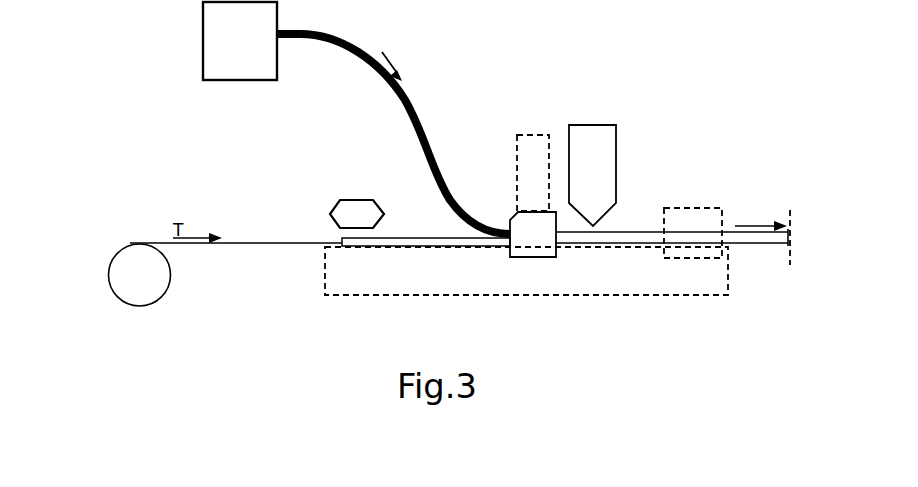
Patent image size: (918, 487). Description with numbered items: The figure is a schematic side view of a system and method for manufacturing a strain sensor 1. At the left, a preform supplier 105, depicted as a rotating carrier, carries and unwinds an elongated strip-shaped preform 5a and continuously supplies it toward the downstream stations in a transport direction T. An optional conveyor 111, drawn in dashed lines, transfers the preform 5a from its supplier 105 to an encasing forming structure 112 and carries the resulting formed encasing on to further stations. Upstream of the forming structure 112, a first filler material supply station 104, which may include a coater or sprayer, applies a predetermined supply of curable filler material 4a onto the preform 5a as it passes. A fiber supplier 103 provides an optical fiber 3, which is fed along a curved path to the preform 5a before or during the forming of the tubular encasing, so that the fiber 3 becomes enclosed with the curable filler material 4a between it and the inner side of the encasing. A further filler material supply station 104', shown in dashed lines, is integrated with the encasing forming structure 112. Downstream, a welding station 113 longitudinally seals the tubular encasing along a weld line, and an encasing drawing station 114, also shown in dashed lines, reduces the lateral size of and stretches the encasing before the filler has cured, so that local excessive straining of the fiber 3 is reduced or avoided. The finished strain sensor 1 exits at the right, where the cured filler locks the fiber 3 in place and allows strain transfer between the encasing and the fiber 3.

The strain sensor 1 is at (768, 255).
The optical fiber 3 is at (426, 127).
The curable filler material 4a is at (428, 238).
The preform 5a is at (275, 238).
The fiber supplier 103 is at (223, 46).
The filler material supply station 104 is at (343, 190).
The filler material supply station 104' is at (548, 137).
The preform supplier 105 is at (125, 288).
The conveyor 111 is at (628, 296).
The encasing forming structure 112 is at (542, 235).
The welding station 113 is at (599, 130).
The encasing drawing station 114 is at (718, 207).